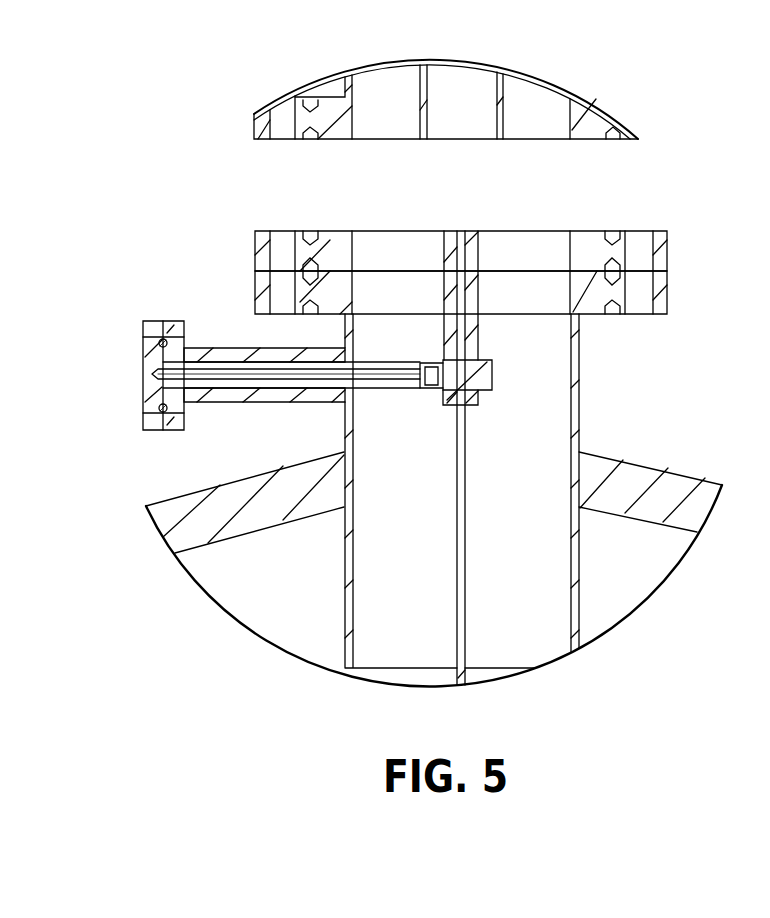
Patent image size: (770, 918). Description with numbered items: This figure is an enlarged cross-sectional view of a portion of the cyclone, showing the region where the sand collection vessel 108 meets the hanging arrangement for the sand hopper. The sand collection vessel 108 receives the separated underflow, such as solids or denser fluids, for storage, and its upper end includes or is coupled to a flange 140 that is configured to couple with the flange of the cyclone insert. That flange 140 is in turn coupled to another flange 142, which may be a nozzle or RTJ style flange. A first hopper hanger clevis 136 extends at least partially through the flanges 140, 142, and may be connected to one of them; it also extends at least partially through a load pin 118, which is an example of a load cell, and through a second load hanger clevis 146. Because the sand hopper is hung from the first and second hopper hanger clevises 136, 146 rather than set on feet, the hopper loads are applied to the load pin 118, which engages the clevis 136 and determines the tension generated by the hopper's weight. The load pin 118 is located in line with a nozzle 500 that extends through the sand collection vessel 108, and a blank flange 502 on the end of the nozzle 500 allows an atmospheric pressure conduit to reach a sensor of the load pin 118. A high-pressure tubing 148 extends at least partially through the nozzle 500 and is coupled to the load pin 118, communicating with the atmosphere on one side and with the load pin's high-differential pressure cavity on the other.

The sand collection vessel 108 is at (672, 485).
The load pin 118 is at (492, 375).
The first hopper hanger clevis 136 is at (467, 593).
The flange 140 is at (667, 253).
The flange 142 is at (667, 297).
The second load hanger clevis 146 is at (440, 253).
The high-pressure tubing 148 is at (233, 365).
The nozzle 500 is at (237, 405).
The blank flange 502 is at (172, 318).